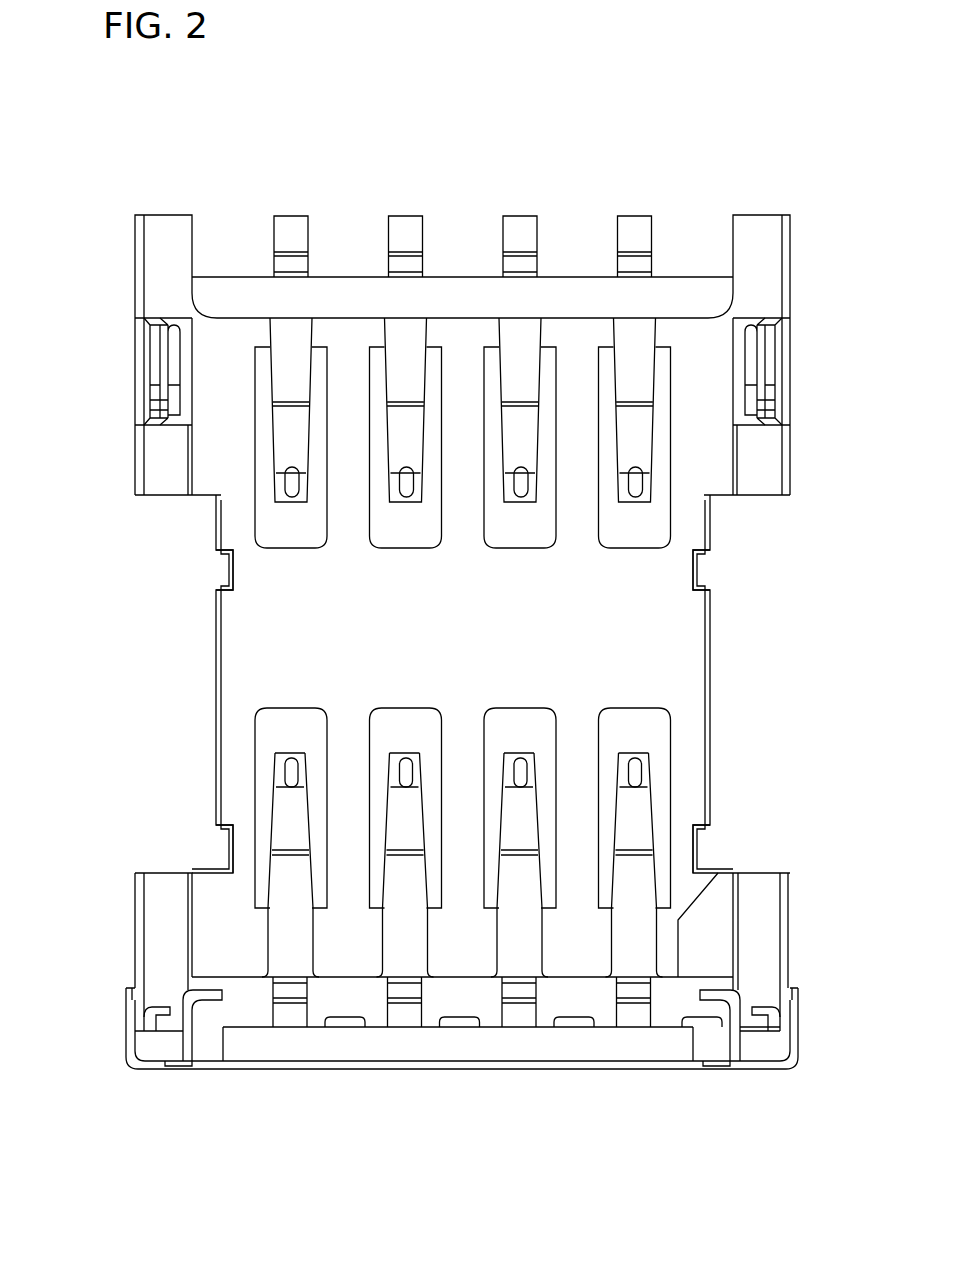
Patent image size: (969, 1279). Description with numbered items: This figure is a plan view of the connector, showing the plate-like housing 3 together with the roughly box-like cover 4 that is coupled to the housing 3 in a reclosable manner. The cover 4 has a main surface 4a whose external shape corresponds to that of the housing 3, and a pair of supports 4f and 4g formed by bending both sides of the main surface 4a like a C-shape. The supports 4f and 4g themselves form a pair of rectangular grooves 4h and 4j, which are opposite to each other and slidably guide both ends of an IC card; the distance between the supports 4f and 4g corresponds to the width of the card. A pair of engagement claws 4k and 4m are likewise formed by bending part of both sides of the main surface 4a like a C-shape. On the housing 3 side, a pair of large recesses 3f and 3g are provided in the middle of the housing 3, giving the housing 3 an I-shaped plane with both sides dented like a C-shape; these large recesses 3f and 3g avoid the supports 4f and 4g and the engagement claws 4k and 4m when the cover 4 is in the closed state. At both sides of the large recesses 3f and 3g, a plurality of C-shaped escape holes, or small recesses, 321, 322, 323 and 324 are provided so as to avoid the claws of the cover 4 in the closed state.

The housing 3 is at (158, 213).
The large recess 3f is at (752, 634).
The large recess 3g is at (176, 638).
The escape hole 321 is at (703, 853).
The escape hole 322 is at (220, 852).
The escape hole 323 is at (705, 570).
The escape hole 324 is at (213, 568).
The cover 4 is at (352, 1069).
The main surface 4a is at (522, 1070).
The support 4f is at (742, 990).
The support 4g is at (181, 1000).
The rectangular groove 4h is at (695, 1008).
The rectangular groove 4j is at (210, 1015).
The engagement claw 4k is at (770, 990).
The engagement claw 4m is at (130, 988).